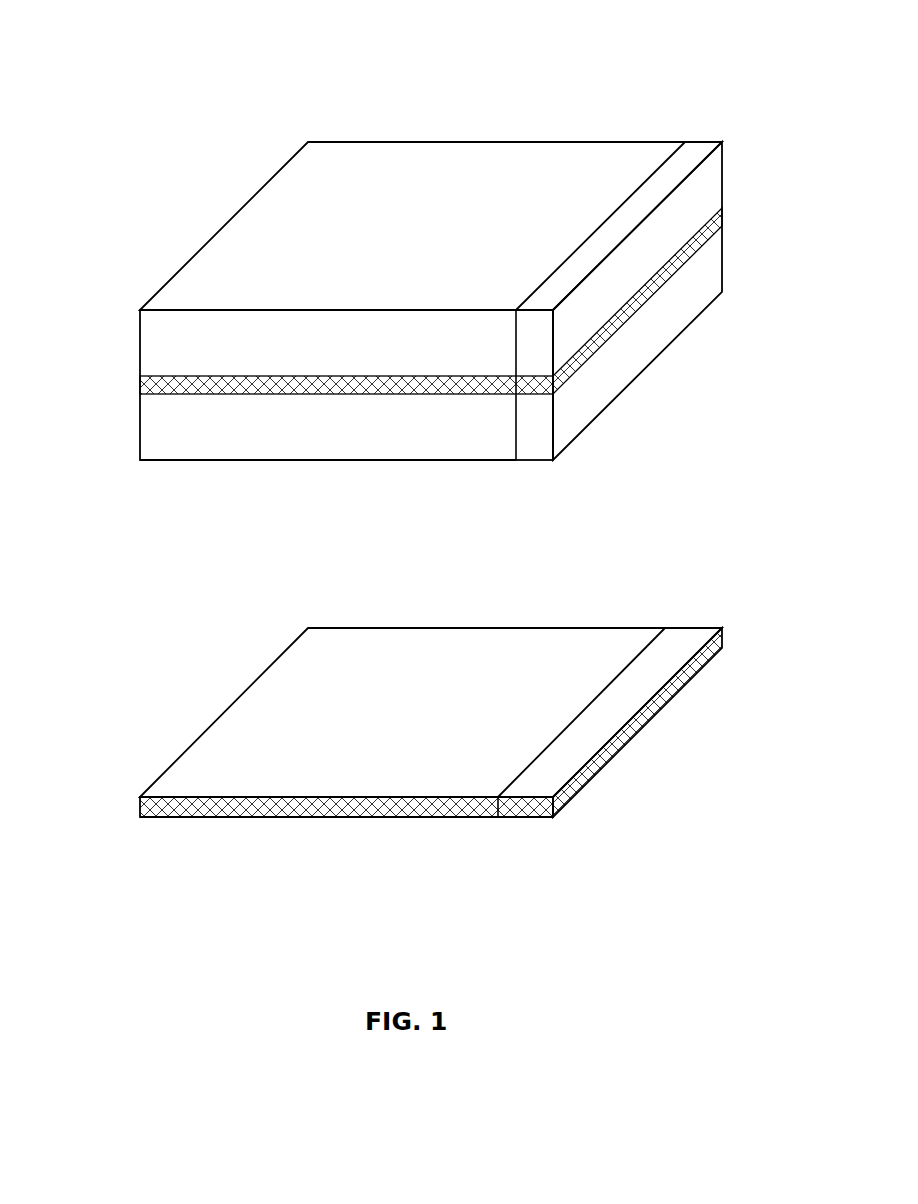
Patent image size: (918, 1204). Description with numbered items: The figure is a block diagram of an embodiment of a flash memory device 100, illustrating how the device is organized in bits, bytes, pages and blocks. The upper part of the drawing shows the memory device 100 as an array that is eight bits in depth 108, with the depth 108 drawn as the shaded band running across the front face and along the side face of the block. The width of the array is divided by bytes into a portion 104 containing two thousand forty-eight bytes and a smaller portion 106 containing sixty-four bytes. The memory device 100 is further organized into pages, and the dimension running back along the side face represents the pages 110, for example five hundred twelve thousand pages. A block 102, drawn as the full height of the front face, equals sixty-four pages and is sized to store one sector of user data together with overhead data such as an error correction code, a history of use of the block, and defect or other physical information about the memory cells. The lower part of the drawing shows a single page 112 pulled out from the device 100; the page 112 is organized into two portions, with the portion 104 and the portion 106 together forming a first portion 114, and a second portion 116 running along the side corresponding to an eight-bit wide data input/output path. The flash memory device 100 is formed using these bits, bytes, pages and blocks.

The flash memory device 100 is at (481, 80).
The block 102 is at (310, 386).
The portion 104 is at (328, 492).
The portion 106 is at (535, 471).
The depth 108 is at (680, 351).
The pages 110 is at (731, 210).
The single page 112 is at (126, 806).
The first portion 114 is at (347, 852).
The second portion 116 is at (647, 741).